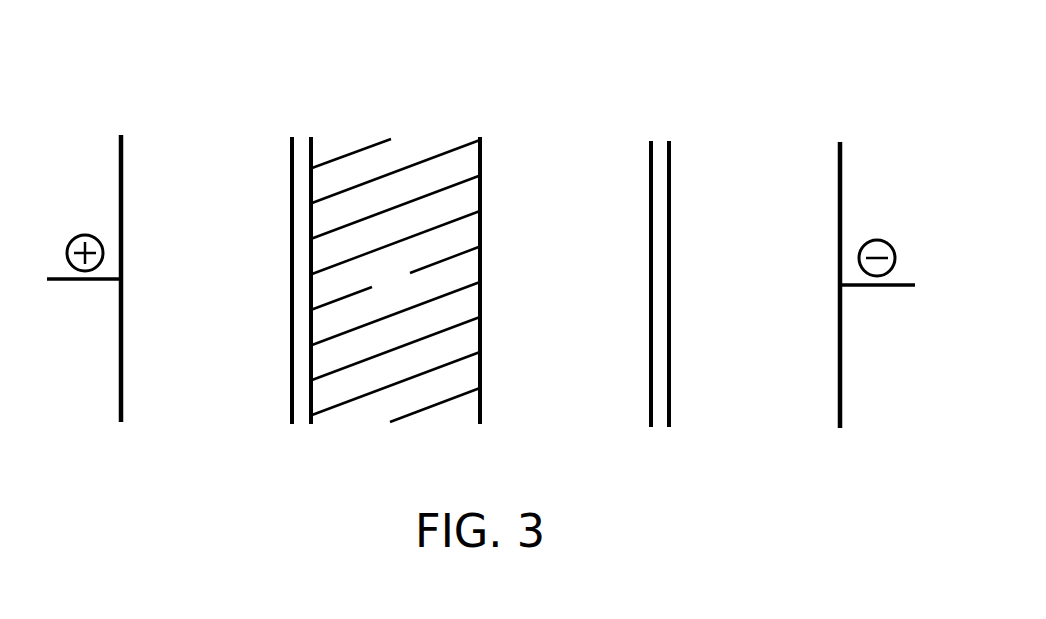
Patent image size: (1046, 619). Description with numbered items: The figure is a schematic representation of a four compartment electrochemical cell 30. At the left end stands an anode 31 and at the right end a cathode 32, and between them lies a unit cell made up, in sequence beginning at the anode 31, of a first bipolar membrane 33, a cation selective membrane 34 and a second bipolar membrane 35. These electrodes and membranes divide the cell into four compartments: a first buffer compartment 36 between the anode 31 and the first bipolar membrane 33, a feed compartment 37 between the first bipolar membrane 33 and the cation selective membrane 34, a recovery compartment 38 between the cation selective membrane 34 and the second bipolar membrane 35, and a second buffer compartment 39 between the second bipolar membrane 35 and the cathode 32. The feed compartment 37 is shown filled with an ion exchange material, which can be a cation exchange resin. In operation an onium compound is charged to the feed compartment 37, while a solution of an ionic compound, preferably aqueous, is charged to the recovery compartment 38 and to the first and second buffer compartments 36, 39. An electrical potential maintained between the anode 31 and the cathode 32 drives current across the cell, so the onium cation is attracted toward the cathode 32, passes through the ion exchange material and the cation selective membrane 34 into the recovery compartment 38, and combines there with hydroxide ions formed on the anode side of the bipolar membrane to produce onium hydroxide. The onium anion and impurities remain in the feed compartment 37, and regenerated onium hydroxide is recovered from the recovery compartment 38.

The electrochemical cell 30 is at (151, 68).
The anode 31 is at (94, 262).
The cathode 32 is at (870, 269).
The first bipolar membrane 33 is at (299, 287).
The cation selective membrane 34 is at (482, 287).
The second bipolar membrane 35 is at (658, 289).
The first buffer compartment 36 is at (206, 280).
The feed compartment 37 is at (396, 280).
The recovery compartment 38 is at (566, 280).
The second buffer compartment 39 is at (755, 280).